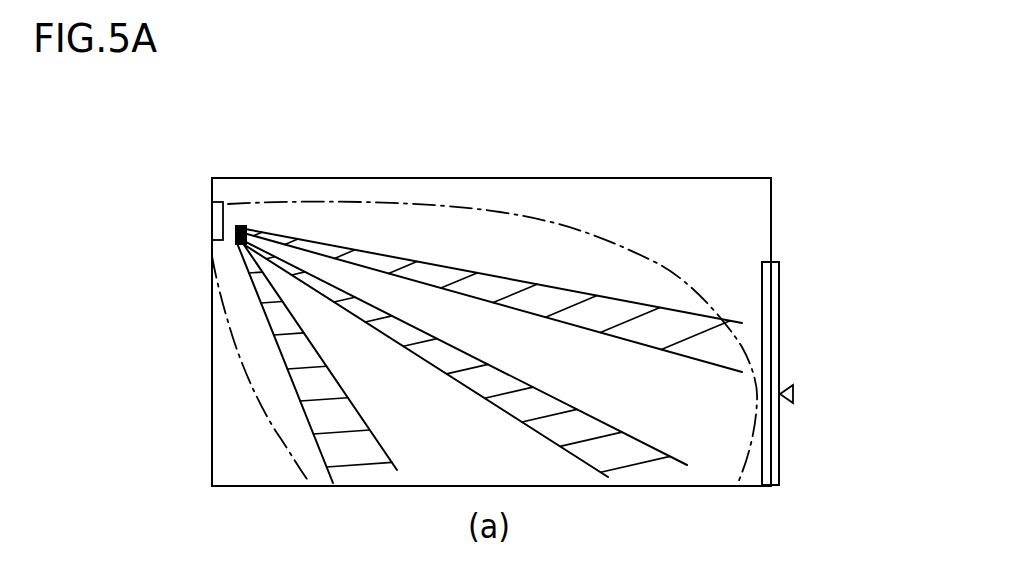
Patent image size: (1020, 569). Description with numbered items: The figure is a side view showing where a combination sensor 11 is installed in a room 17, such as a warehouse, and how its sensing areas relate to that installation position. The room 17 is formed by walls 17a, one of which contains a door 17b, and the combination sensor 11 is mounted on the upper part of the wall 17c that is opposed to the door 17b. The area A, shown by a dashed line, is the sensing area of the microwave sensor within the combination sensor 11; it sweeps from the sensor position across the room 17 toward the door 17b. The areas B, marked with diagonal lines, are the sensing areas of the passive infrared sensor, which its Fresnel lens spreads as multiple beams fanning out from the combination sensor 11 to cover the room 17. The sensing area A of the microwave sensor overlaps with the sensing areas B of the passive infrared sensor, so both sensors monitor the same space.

The combination sensor 11 is at (218, 201).
The room 17 is at (745, 202).
The walls 17a is at (770, 240).
The door 17b is at (779, 287).
The wall 17c is at (213, 433).
The sensing area of MW sensor A is at (597, 233).
The sensing areas of PIR sensor B is at (337, 380).